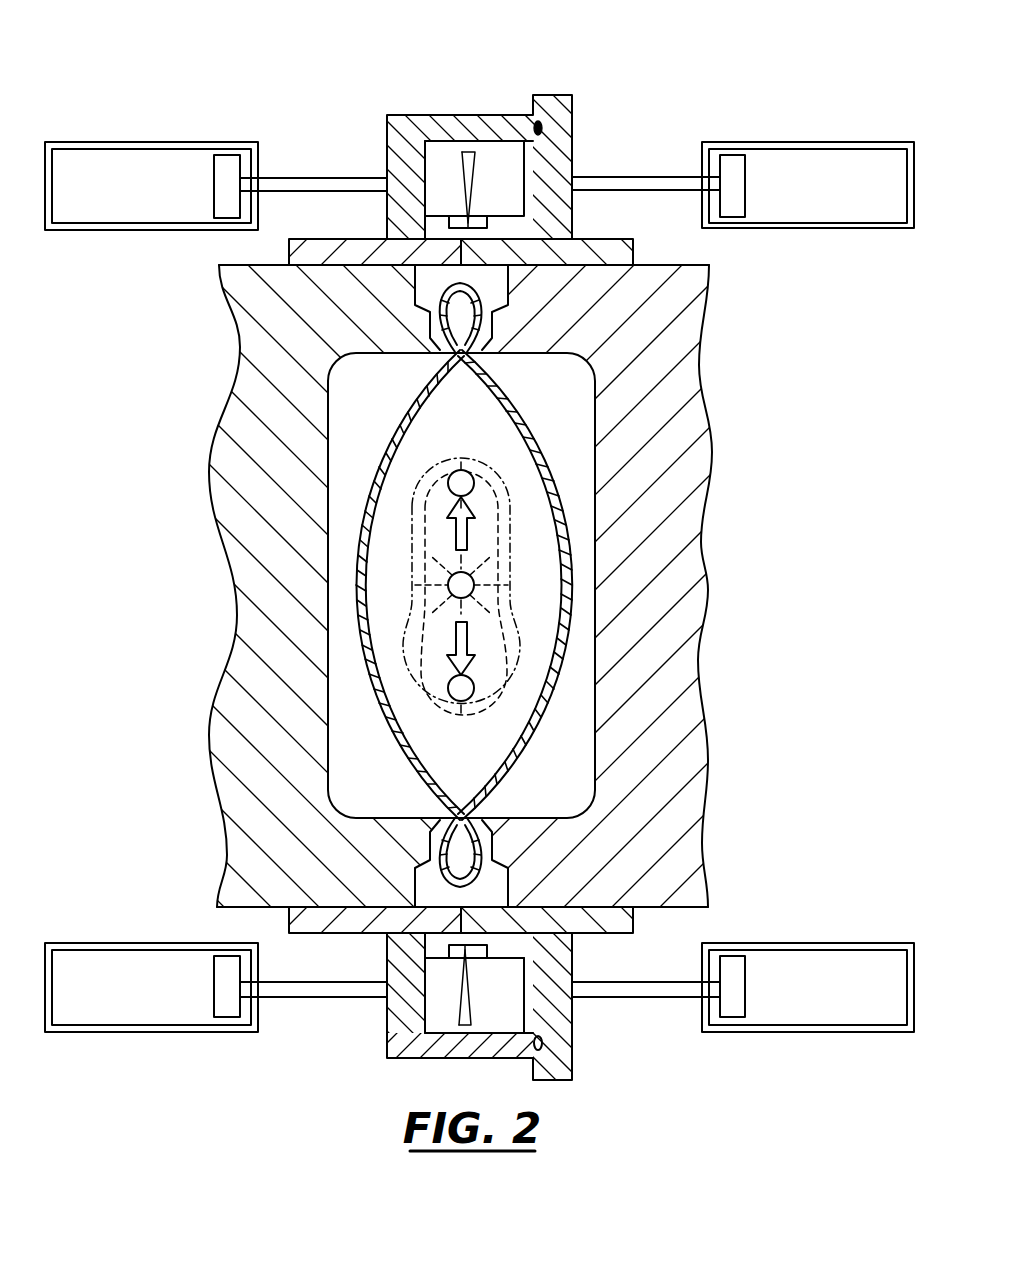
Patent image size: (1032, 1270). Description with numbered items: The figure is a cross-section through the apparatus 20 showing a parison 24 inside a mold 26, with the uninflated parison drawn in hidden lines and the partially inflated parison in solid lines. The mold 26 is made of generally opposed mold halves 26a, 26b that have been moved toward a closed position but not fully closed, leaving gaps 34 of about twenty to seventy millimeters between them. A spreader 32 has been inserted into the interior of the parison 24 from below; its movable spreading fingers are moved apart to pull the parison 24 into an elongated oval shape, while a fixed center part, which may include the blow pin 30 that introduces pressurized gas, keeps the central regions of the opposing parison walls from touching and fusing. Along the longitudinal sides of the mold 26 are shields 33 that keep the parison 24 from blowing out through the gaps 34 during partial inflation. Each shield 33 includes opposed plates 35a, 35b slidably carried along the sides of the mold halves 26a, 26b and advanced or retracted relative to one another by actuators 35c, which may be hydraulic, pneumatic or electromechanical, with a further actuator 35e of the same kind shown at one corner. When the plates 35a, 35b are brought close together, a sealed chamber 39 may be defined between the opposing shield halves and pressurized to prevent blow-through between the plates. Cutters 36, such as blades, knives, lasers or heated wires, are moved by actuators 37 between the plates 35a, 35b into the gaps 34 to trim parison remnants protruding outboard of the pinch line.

The apparatus 20 is at (695, 70).
The parison 24 is at (508, 478).
The mold 26 is at (178, 288).
The mold half 26a is at (258, 786).
The mold half 26b is at (688, 760).
The blow pin 30 is at (472, 580).
The spreader 32 is at (452, 680).
The shield 33 is at (350, 138).
The gap 34 is at (505, 281).
The plate 35a is at (300, 251).
The plate 35b is at (627, 251).
The actuator 35c is at (783, 128).
The actuator 35e is at (158, 128).
The cutter 36 is at (466, 158).
The actuator 37 is at (500, 155).
The sealed chamber 39 is at (522, 948).